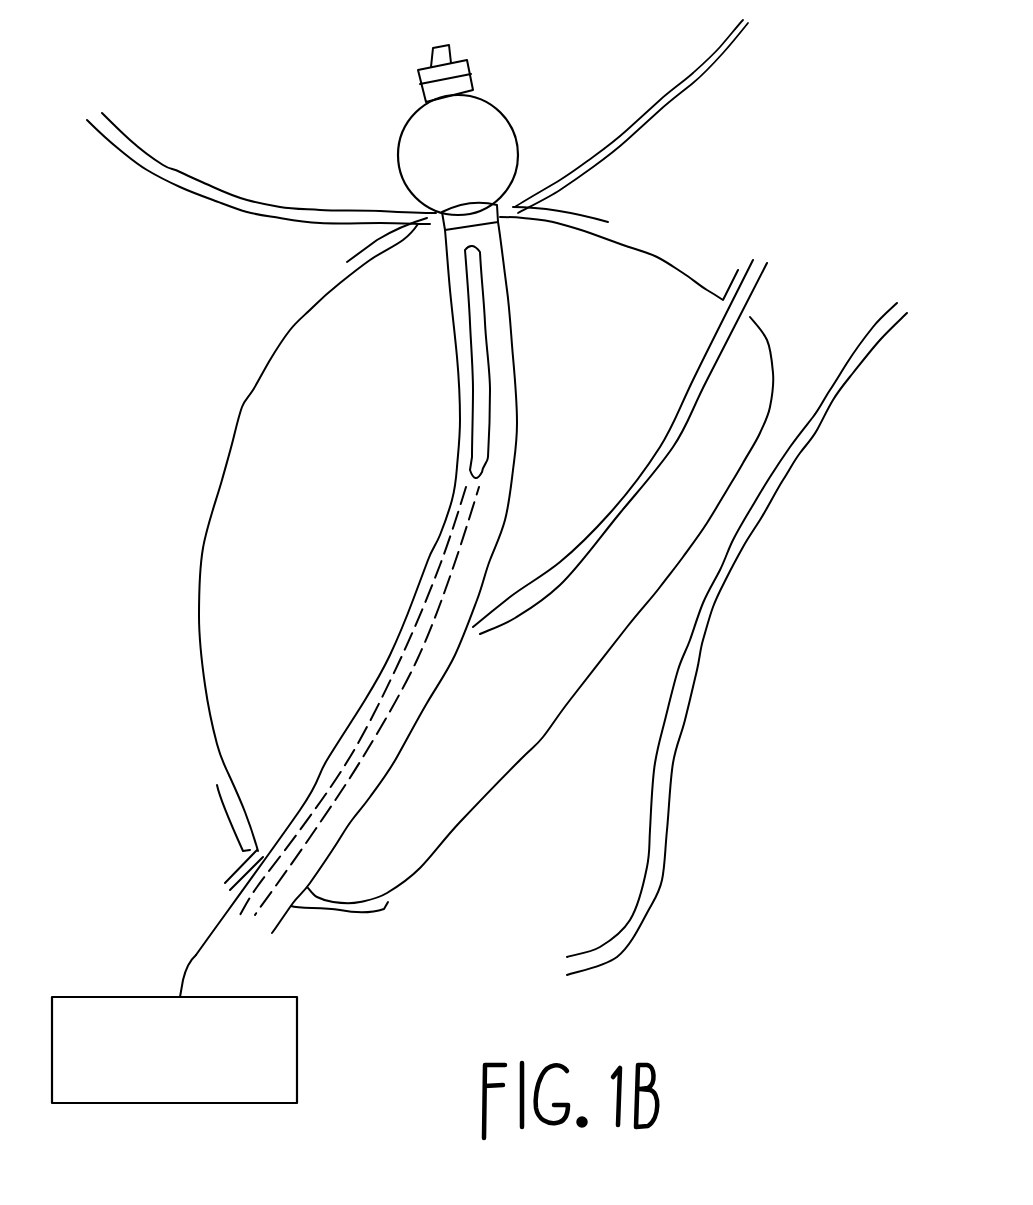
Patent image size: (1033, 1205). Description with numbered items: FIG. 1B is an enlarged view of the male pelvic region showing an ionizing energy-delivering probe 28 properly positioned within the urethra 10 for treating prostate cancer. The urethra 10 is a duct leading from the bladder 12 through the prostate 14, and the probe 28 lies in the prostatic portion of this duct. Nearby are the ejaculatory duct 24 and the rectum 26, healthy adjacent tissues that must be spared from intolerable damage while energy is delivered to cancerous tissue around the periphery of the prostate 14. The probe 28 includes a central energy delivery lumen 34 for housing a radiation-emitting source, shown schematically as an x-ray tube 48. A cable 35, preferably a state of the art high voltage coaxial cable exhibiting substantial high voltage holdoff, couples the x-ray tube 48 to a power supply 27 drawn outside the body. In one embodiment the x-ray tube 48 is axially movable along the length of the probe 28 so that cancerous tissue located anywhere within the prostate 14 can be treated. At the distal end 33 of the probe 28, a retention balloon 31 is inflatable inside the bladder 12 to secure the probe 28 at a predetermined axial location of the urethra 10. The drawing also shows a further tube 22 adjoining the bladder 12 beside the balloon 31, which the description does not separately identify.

The urethra 10 is at (238, 868).
The bladder 12 is at (680, 66).
The prostate 14 is at (512, 712).
The cavity neck wall 22 is at (507, 207).
The ejaculatory duct 24 is at (723, 344).
The rectum 26 is at (697, 800).
The power supply 27 is at (297, 1032).
The probe 28 is at (383, 748).
The retention balloon 31 is at (508, 113).
The distal end 33 is at (450, 57).
The central energy delivery lumen 34 is at (275, 885).
The cable 35 is at (433, 617).
The x-ray tube 48 is at (486, 449).